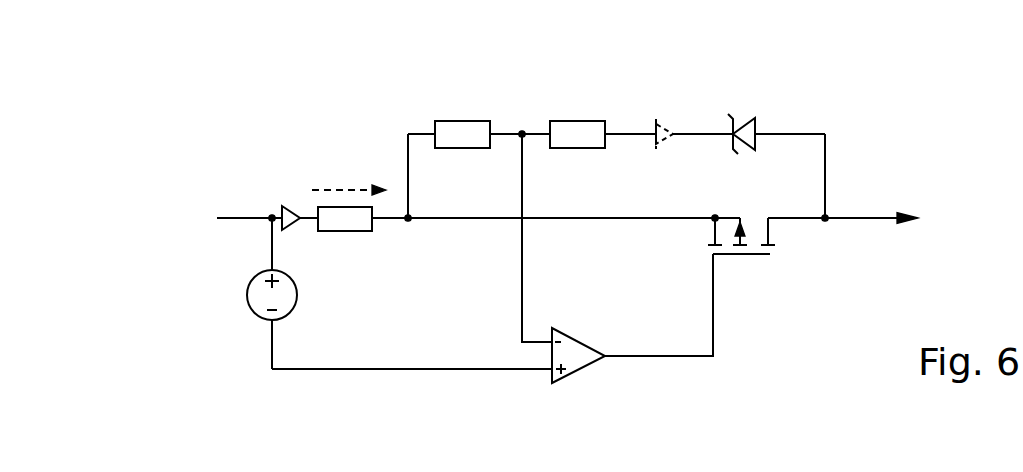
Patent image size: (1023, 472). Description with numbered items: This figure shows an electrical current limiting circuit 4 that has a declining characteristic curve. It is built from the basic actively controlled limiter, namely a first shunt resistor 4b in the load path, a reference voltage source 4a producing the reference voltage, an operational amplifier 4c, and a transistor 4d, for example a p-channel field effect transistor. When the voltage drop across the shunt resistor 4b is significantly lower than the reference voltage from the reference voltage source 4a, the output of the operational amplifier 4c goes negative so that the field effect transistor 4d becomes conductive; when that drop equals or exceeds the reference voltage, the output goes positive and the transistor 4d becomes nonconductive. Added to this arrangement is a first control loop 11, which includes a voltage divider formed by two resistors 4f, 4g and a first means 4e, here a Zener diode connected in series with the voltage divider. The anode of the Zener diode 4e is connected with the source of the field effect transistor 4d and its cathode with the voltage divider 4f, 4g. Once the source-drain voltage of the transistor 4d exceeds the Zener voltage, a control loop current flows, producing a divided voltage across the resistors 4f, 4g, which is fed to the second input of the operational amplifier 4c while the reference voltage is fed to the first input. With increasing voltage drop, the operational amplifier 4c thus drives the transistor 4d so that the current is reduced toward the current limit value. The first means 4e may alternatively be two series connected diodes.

The electrical current limiting circuit 4 is at (898, 153).
The reference voltage source 4a is at (248, 322).
The first shunt resistor 4b is at (350, 232).
The operational amplifier 4c is at (578, 352).
The transistor 4d is at (757, 270).
The first means 4e is at (762, 124).
The voltage divider resistor 4f is at (577, 134).
The voltage divider resistor 4g is at (462, 134).
The first control loop 11 is at (433, 57).